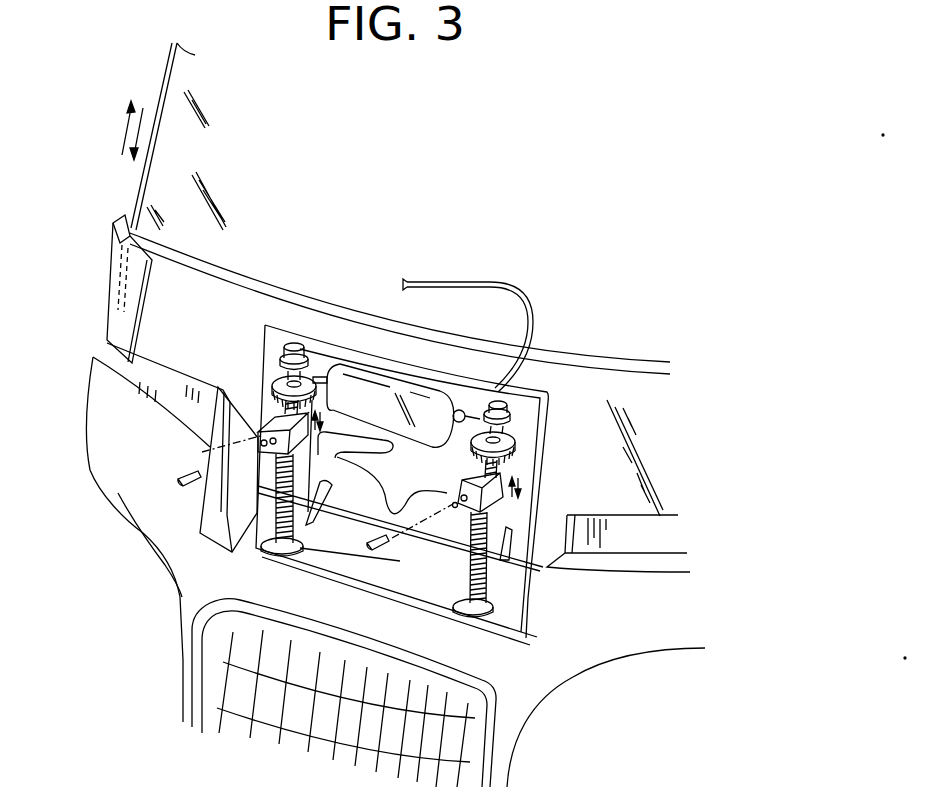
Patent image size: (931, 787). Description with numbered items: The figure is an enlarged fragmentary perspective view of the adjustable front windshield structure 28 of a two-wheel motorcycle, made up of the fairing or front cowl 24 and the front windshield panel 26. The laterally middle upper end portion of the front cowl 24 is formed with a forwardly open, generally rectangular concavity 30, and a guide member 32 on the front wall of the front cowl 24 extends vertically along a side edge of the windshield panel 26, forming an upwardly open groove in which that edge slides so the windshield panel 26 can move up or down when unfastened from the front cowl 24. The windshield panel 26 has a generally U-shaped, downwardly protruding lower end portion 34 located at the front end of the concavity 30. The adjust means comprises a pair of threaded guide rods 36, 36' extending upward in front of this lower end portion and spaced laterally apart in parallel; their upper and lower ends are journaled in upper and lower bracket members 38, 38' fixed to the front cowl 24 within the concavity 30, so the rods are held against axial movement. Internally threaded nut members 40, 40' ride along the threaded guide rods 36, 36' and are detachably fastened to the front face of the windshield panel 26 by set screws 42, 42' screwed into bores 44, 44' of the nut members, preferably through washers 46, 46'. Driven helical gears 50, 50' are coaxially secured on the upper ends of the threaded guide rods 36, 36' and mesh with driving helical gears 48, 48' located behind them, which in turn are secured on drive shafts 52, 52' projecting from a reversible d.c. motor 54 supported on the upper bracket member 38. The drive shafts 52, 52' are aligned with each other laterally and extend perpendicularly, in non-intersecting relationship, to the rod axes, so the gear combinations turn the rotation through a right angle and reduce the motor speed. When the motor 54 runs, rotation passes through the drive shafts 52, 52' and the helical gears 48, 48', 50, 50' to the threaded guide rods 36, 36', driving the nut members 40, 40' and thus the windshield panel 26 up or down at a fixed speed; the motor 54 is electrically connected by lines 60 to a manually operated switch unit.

The front cowl 24 is at (577, 679).
The front windshield panel 26 is at (344, 225).
The adjustable front windshield structure 28 is at (161, 522).
The concavity 30 is at (512, 613).
The guide member 32 is at (110, 272).
The lower end portion 34 is at (225, 487).
The threaded guide rod 36 is at (265, 563).
The threaded guide rod 36' is at (480, 633).
The upper bracket member 38 is at (400, 569).
The lower bracket member 38' is at (618, 468).
The nut member 40 is at (376, 468).
The nut member 40' is at (533, 518).
The set screw 42 is at (159, 480).
The set screw 42' is at (383, 565).
The bore 44 is at (265, 407).
The bore 44' is at (451, 481).
The washer 46 is at (213, 454).
The washer 46' is at (429, 552).
The driving helical gear 48 is at (265, 337).
The driving helical gear 48' is at (540, 421).
The driven helical gear 50 is at (265, 367).
The driven helical gear 50' is at (533, 454).
The drive shaft 52 is at (315, 404).
The drive shaft 52' is at (478, 447).
The motor 54 is at (377, 405).
The lines 60 is at (462, 280).